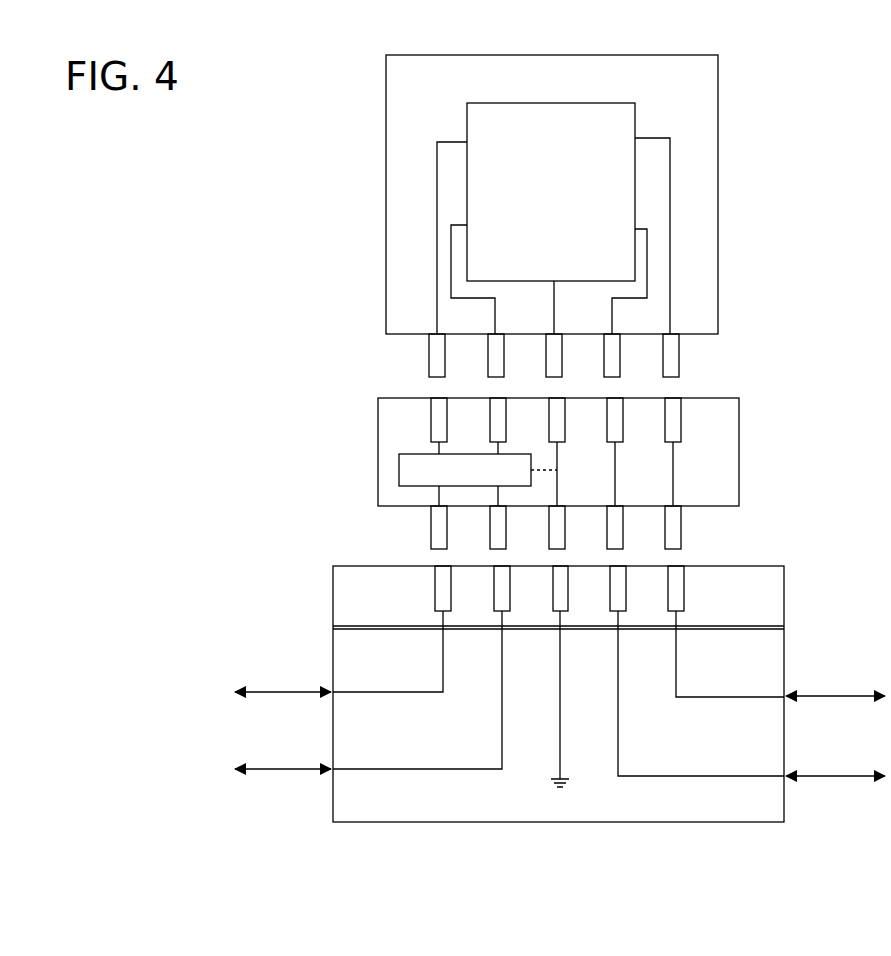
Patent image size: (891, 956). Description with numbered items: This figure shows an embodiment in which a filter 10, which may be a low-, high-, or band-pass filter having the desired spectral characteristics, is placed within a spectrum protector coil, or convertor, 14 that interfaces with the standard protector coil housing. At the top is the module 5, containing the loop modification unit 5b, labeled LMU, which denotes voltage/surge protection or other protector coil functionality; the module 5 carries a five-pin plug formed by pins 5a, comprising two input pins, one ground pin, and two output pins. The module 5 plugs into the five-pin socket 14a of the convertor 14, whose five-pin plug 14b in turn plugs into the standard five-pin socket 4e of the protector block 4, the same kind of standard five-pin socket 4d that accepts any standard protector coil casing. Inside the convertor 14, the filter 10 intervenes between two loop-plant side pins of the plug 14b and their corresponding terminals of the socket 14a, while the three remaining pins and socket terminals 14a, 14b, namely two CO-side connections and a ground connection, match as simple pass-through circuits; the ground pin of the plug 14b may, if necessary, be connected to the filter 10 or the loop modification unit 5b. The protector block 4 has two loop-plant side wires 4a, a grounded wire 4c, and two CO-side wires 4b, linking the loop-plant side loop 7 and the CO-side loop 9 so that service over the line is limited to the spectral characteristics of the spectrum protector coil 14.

The protector block 4 is at (752, 670).
The loop-plant side wires 4a is at (402, 730).
The CO-side wires 4b is at (714, 722).
The grounded wire 4c is at (582, 727).
The five-pin socket 4d is at (445, 590).
The protector block socket 4e is at (742, 605).
The module 5 is at (695, 248).
The pins 5a is at (679, 362).
The loop modification unit 5b is at (596, 173).
The loop-plant side loop 7 is at (281, 734).
The CO-side loop 9 is at (843, 731).
The filter 10 is at (399, 468).
The spectrum protector coil 14 is at (720, 455).
The five-pin socket 14a is at (681, 418).
The five-pin plug 14b is at (681, 520).